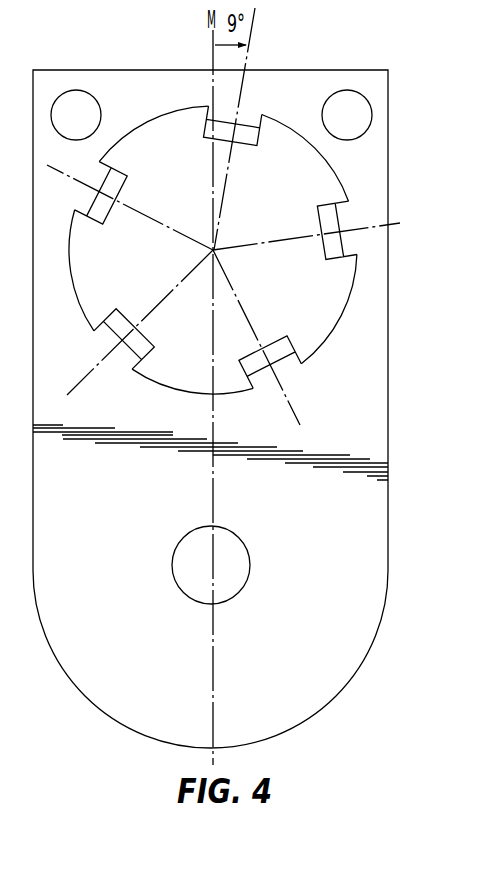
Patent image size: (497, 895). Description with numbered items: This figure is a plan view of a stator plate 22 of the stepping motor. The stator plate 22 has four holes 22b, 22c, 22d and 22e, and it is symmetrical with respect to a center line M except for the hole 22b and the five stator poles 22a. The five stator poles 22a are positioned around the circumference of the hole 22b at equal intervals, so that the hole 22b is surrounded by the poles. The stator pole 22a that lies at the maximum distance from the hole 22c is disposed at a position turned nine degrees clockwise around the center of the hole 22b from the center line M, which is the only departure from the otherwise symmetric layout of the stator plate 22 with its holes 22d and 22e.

The stator plate 22 is at (328, 702).
The stator poles 22a is at (129, 190).
The hole 22b is at (304, 333).
The hole 22c is at (231, 599).
The hole 22d is at (63, 90).
The hole 22e is at (341, 90).